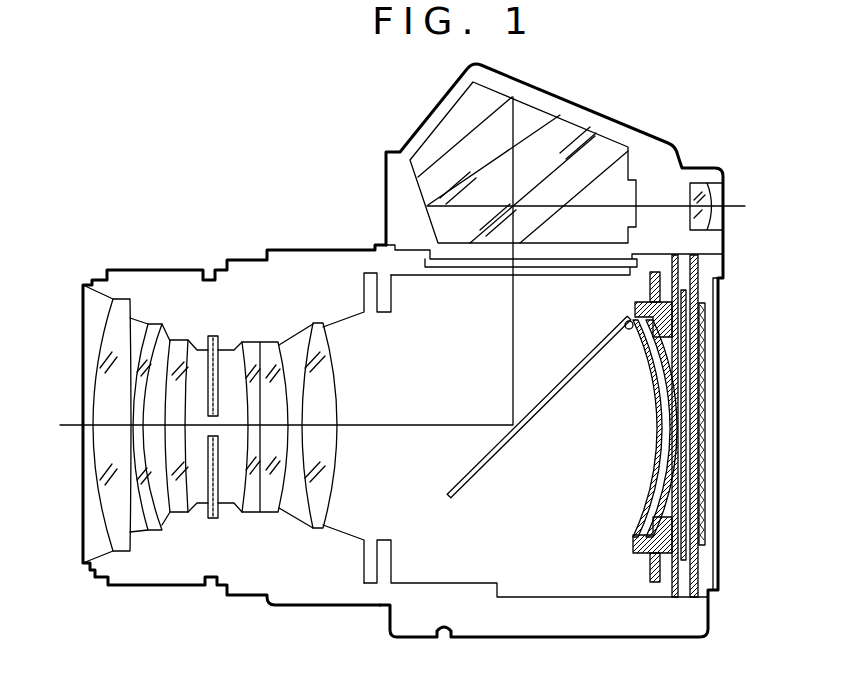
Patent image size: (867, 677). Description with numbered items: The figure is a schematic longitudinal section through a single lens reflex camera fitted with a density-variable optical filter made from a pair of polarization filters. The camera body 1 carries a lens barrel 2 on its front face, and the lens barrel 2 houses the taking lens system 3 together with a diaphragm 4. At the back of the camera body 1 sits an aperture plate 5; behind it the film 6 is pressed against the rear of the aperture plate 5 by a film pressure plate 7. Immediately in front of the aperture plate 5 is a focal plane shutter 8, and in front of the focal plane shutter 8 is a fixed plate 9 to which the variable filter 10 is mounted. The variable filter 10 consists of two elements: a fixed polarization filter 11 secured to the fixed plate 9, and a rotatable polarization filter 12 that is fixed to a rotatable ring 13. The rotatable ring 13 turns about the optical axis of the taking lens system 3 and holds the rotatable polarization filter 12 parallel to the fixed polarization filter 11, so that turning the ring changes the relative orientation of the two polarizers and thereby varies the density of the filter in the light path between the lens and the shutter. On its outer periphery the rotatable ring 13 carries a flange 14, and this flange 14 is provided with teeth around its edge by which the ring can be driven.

The camera body 1 is at (679, 138).
The lens barrel 2 is at (205, 260).
The taking lens system 3 is at (107, 490).
The diaphragm 4 is at (209, 506).
The aperture plate 5 is at (695, 383).
The film 6 is at (706, 358).
The film pressure plate 7 is at (701, 313).
The focal plane shutter 8 is at (687, 303).
The fixed plate 9 is at (671, 260).
The variable filter 10 is at (651, 452).
The fixed polarization filter 11 is at (667, 383).
The rotatable polarization filter 12 is at (656, 423).
The rotatable ring 13 is at (635, 308).
The flange 14 is at (650, 285).